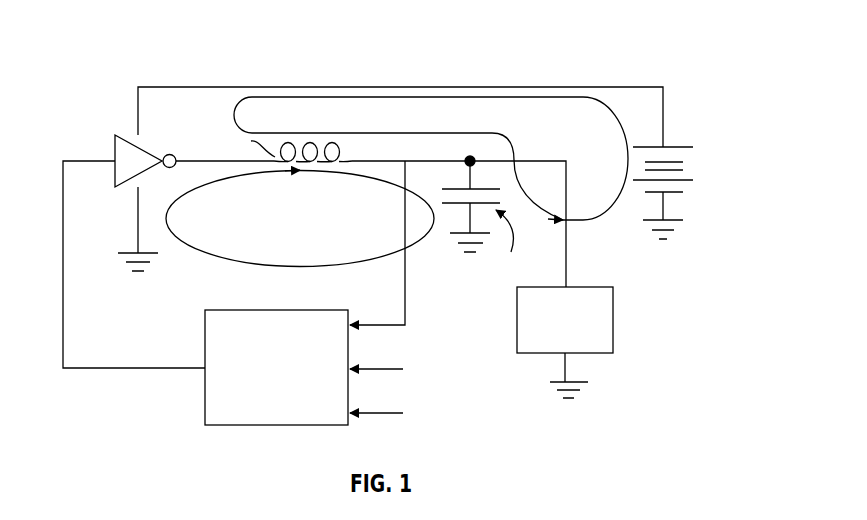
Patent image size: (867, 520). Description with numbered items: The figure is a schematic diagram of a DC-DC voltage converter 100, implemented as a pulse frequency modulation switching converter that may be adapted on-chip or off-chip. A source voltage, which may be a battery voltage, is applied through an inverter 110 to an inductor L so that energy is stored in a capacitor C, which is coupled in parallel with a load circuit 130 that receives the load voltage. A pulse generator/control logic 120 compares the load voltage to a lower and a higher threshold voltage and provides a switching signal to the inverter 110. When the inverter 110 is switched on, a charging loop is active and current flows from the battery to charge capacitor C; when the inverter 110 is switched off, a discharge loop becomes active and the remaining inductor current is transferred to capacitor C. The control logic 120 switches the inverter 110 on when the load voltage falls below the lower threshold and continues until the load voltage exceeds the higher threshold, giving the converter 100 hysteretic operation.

The voltage converter 100 is at (171, 37).
The inverter 110 is at (115, 140).
The pulse generator/control logic 120 is at (205, 338).
The load circuit 130 is at (613, 321).